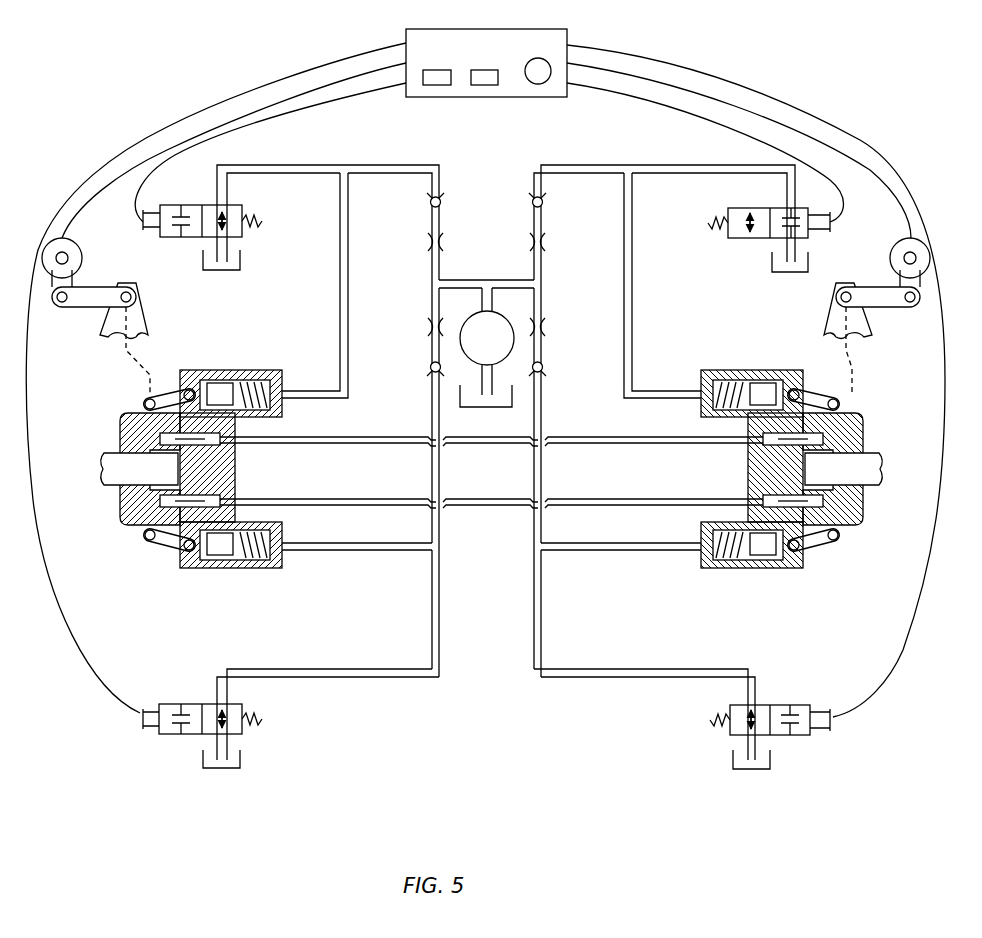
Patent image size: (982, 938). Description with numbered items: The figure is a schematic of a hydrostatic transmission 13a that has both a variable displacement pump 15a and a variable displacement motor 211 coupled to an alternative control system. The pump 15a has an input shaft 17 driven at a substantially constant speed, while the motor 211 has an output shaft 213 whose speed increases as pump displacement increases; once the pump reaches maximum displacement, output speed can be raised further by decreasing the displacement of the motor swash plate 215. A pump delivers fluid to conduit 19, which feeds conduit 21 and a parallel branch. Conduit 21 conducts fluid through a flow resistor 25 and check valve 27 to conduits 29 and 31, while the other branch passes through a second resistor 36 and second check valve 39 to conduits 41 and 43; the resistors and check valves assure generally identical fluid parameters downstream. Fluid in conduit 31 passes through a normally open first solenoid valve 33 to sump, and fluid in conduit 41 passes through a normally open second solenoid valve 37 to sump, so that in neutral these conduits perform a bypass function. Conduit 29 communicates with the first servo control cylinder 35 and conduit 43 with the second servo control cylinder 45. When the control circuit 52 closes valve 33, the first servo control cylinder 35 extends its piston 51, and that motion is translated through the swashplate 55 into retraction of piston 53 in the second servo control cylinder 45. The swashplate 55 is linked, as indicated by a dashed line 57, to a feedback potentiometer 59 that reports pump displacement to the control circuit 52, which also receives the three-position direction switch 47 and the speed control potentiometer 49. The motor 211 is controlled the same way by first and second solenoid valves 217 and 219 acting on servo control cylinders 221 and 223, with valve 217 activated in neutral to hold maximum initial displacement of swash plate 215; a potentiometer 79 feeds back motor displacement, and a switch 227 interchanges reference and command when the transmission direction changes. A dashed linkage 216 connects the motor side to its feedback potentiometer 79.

The electrical control circuit 52 is at (500, 29).
The output shaft 213 is at (868, 485).
The switch 227 is at (427, 70).
The three-position switch 47 is at (488, 70).
The potentiometer 49 is at (540, 85).
The conduit 41 is at (243, 167).
The second two-position solenoid valve 37 is at (193, 205).
The feedback potentiometer 59 is at (78, 250).
The dashed line 57 is at (138, 362).
The conduit 43 is at (338, 238).
The second check valve 39 is at (427, 207).
The second resistor 36 is at (428, 247).
The flow resistor 25 is at (427, 327).
The check valve 27 is at (428, 367).
The conduit 19 is at (487, 302).
The second servo control cylinder 45 is at (247, 370).
The piston 53 is at (197, 375).
The swashplate 55 is at (130, 415).
The input shaft 17 is at (113, 453).
The piston 51 is at (198, 568).
The first servo control cylinder 35 is at (231, 581).
The variable displacement pump 15a is at (156, 505).
The hydrostatic transmission 13a is at (420, 426).
The conduit 21 is at (441, 598).
The conduit 29 is at (405, 543).
The conduit 31 is at (405, 669).
The first two-position solenoid valve 33 is at (190, 734).
The first two-position solenoid valve 217 is at (760, 208).
The potentiometer 79 is at (896, 240).
The actuating linkage 216 is at (850, 370).
The servo control cylinder 221 is at (713, 357).
The swash plate 215 is at (875, 432).
The servo control cylinder 223 is at (707, 582).
The variable displacement motor 211 is at (839, 510).
The second two-position solenoid valve 219 is at (793, 737).